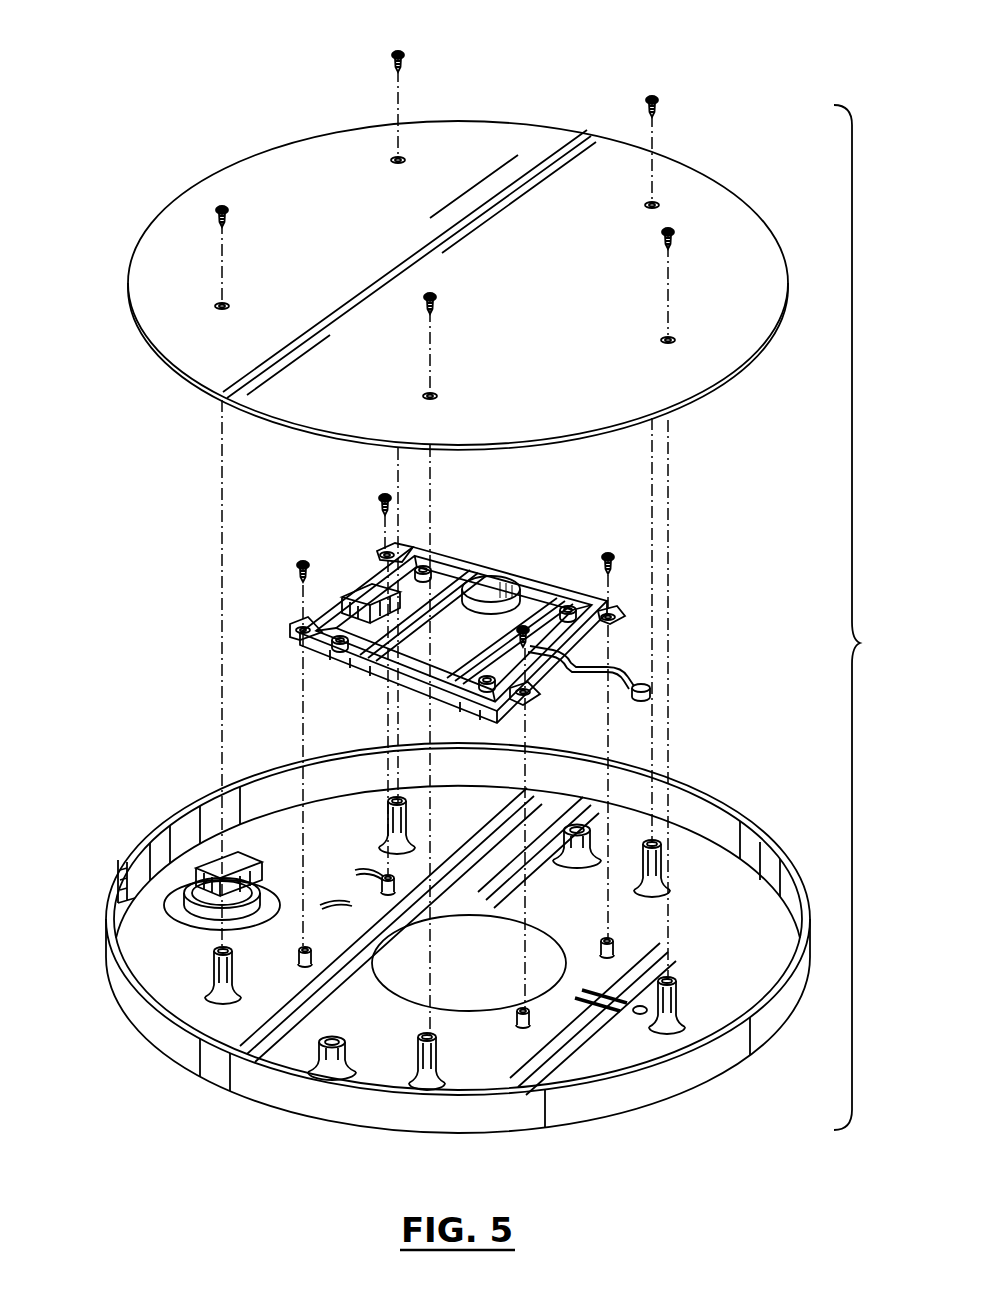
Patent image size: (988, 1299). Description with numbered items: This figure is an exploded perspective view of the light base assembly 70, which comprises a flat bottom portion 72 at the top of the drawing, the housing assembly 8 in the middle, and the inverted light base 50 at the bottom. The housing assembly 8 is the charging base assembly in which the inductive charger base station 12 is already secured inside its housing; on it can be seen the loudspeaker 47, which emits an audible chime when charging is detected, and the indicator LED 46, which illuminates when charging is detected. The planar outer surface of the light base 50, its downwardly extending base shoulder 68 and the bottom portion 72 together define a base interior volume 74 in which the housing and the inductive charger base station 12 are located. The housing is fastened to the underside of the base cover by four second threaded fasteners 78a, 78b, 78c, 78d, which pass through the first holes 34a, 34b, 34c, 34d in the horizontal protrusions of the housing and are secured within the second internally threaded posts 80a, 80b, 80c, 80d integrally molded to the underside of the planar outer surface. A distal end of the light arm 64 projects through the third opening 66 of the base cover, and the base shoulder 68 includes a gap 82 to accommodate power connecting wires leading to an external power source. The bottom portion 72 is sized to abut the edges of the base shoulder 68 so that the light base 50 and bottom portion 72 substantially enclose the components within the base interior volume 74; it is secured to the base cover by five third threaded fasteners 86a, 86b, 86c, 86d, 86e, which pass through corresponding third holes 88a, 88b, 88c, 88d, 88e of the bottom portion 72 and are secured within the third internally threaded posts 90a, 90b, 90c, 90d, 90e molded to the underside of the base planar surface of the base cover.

The housing assembly 8 is at (286, 598).
The inductive charger base station 12 is at (350, 610).
The first hole 34a is at (384, 553).
The first hole 34b is at (616, 620).
The first hole 34c is at (534, 698).
The first hole 34d is at (297, 630).
The indicator light-emitting diode 46 is at (653, 688).
The loudspeaker 47 is at (490, 590).
The light base 50 is at (157, 807).
The light arm 64 is at (215, 862).
The third opening 66 is at (178, 895).
The base shoulder 68 is at (745, 1040).
The light base assembly 70 is at (868, 617).
The bottom portion 72 is at (722, 380).
The base interior volume 74 is at (155, 955).
The second threaded fastener 78a is at (380, 498).
The second threaded fastener 78b is at (614, 557).
The second threaded fastener 78c is at (523, 626).
The second threaded fastener 78d is at (297, 565).
The second internally threaded post 80a is at (383, 882).
The second internally threaded post 80b is at (614, 950).
The second internally threaded post 80c is at (525, 1030).
The second internally threaded post 80d is at (300, 964).
The gap 82 is at (112, 918).
The third threaded fastener 86a is at (216, 210).
The third threaded fastener 86b is at (392, 54).
The third threaded fastener 86c is at (438, 298).
The third threaded fastener 86d is at (660, 100).
The third threaded fastener 86e is at (676, 232).
The third hole 88a is at (216, 306).
The third hole 88b is at (392, 161).
The third hole 88c is at (438, 397).
The third hole 88d is at (660, 205).
The third hole 88e is at (676, 340).
The third internally threaded post 90a is at (212, 980).
The third internally threaded post 90b is at (389, 805).
The third internally threaded post 90c is at (427, 1086).
The third internally threaded post 90d is at (660, 847).
The third internally threaded post 90e is at (672, 1030).